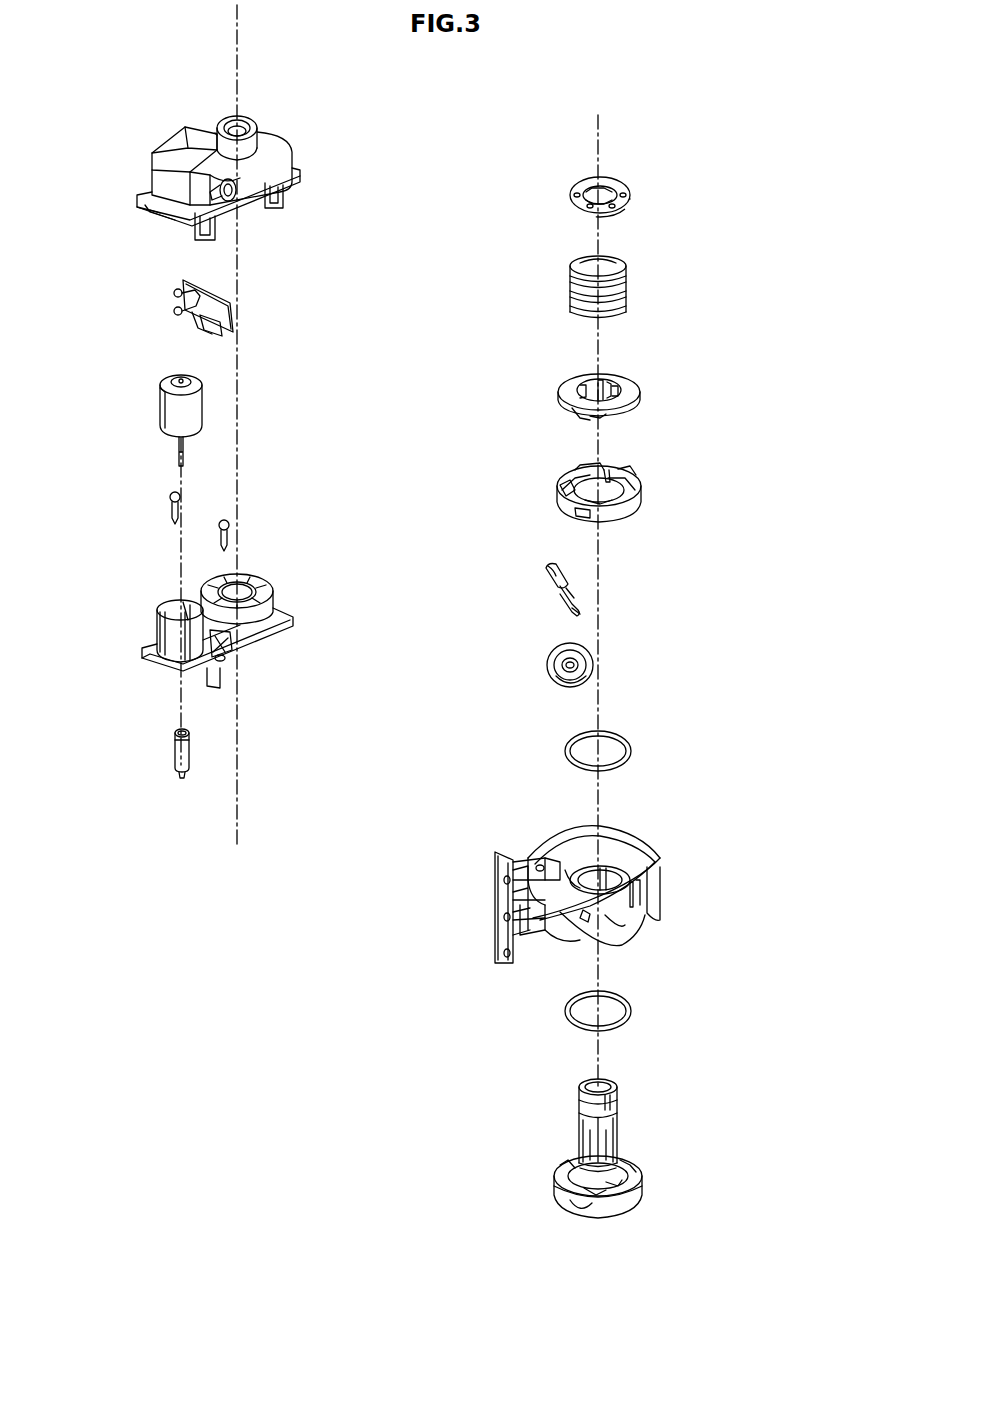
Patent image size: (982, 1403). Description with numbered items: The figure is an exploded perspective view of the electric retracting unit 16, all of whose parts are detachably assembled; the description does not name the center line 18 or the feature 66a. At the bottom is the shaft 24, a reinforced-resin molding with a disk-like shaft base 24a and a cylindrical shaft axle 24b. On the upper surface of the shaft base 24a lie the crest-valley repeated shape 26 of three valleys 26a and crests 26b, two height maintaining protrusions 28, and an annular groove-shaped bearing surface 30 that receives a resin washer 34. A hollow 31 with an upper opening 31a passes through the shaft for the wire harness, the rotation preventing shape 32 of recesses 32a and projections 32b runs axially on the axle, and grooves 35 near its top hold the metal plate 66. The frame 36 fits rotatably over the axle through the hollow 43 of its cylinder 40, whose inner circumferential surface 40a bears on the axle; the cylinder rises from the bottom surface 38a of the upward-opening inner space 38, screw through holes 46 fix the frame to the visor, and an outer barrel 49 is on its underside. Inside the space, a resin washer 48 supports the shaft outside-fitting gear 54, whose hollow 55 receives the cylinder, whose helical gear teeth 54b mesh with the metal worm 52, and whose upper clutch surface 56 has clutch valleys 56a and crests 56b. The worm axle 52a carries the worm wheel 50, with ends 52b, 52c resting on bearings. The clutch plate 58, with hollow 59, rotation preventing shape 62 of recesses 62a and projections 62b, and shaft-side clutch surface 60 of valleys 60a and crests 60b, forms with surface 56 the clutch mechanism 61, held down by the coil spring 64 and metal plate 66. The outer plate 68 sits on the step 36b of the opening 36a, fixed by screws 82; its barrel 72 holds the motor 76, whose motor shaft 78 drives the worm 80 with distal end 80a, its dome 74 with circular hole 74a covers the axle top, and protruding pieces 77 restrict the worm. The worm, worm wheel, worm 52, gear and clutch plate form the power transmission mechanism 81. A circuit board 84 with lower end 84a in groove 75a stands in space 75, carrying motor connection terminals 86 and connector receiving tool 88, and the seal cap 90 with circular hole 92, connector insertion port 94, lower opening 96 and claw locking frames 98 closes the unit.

The electric retracting unit 16 is at (697, 60).
The axis 18 is at (236, 35).
The shaft 24 is at (658, 1115).
The shaft base 24a is at (640, 1186).
The shaft axle 24b is at (615, 1140).
The crest-valley repeated shape 26 is at (488, 1225).
The valley 26a is at (590, 1193).
The crest 26b is at (610, 1186).
The height maintaining protrusions 28 is at (628, 1196).
The bearing surface 30 is at (640, 1166).
The hollow 31 is at (600, 1082).
The upper opening 31a is at (590, 1085).
The rotation preventing shape 32 is at (478, 1145).
The rotation preventing recess 32a is at (600, 1150).
The rotation preventing projection 32b is at (580, 1172).
The resin washer 34 is at (632, 1011).
The grooves 35 is at (612, 1111).
The frame 36 is at (672, 866).
The opening 36a is at (625, 834).
The step 36b is at (640, 846).
The inner space 38 is at (550, 856).
The bottom surface 38a is at (545, 861).
The cylinder 40 is at (580, 870).
The inner circumferential surface 40a is at (560, 866).
The hollow 43 is at (605, 870).
The screw through holes 46 is at (505, 954).
The resin washer 48 is at (632, 748).
The outer barrel 49 is at (623, 926).
The worm wheel 50 is at (595, 661).
The worm 52 is at (565, 577).
The axle 52a is at (575, 600).
The end 52b is at (572, 612).
The end 52c is at (548, 572).
The shaft outside-fitting gear 54 is at (642, 488).
The gear teeth 54b is at (635, 509).
The hollow 55 is at (610, 471).
The shaft outside-fitting gear-side clutch surface 56 is at (500, 485).
The clutch valley 56a is at (577, 512).
The clutch crest 56b is at (567, 487).
The clutch plate 58 is at (648, 401).
The hollow 59 is at (590, 390).
The shaft-side clutch surface 60 is at (512, 405).
The clutch valley 60a is at (592, 423).
The clutch crest 60b is at (580, 413).
The clutch mechanism 61 is at (455, 512).
The rotation preventing shape 62 is at (678, 322).
The rotation preventing recess 62a is at (601, 384).
The rotation preventing projection 62b is at (606, 385).
The coil spring 64 is at (622, 272).
The metal plate 66 is at (628, 187).
The retainer opening 66a is at (600, 188).
The outer plate 68 is at (296, 606).
The barrel 72 is at (158, 628).
The dome 74 is at (282, 586).
The circular hole 74a is at (240, 580).
The space 75 is at (197, 600).
The groove 75a is at (228, 634).
The motor 76 is at (168, 412).
The protruding pieces 77 is at (218, 684).
The motor shaft 78 is at (178, 450).
The worm 80 is at (176, 755).
The distal end 80a is at (183, 781).
The power transmission mechanism 81 is at (735, 315).
The screws 82 is at (180, 498).
The circuit board 84 is at (228, 313).
The lower end 84a is at (196, 330).
The motor connection terminals 86 is at (205, 289).
The connector receiving tool 88 is at (205, 332).
The seal cap 90 is at (297, 131).
The circular hole 92 is at (240, 118).
The connector insertion port 94 is at (232, 195).
The opening 96 is at (158, 222).
The claw locking frame 98 is at (285, 200).